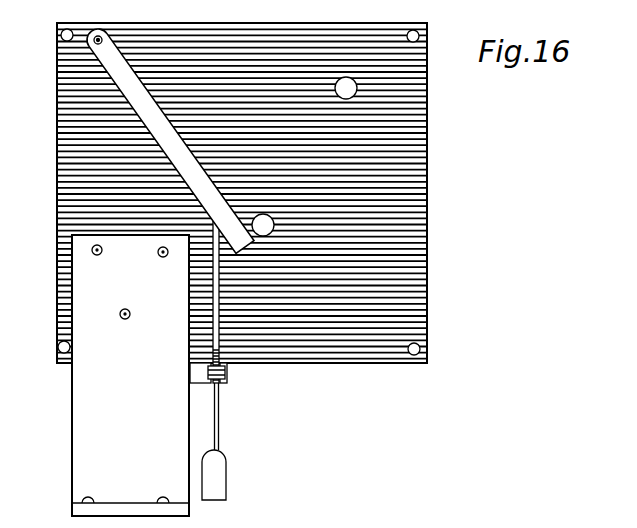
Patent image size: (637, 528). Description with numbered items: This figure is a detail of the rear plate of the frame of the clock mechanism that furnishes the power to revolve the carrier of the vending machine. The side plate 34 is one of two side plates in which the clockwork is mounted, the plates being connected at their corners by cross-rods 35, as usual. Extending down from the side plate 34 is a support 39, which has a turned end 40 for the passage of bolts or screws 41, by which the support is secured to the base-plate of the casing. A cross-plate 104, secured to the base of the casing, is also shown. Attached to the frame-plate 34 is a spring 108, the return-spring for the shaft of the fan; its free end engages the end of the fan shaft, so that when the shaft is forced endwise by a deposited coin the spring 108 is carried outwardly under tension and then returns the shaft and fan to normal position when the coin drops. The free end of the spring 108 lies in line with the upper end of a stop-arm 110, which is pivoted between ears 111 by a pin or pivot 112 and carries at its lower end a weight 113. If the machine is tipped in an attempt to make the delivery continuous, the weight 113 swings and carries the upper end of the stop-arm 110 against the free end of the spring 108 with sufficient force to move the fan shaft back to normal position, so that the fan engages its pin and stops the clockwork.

The side plate 34 is at (412, 253).
The cross-rods 35 is at (438, 357).
The support 39 is at (130, 375).
The turned end 40 is at (72, 508).
The bolts or screws 41 is at (90, 496).
The cross-plate 104 is at (108, 26).
The spring 108 is at (170, 141).
The stop-arm 110 is at (221, 290).
The ears 111 is at (252, 393).
The pin or pivot 112 is at (229, 371).
The weight 113 is at (228, 478).